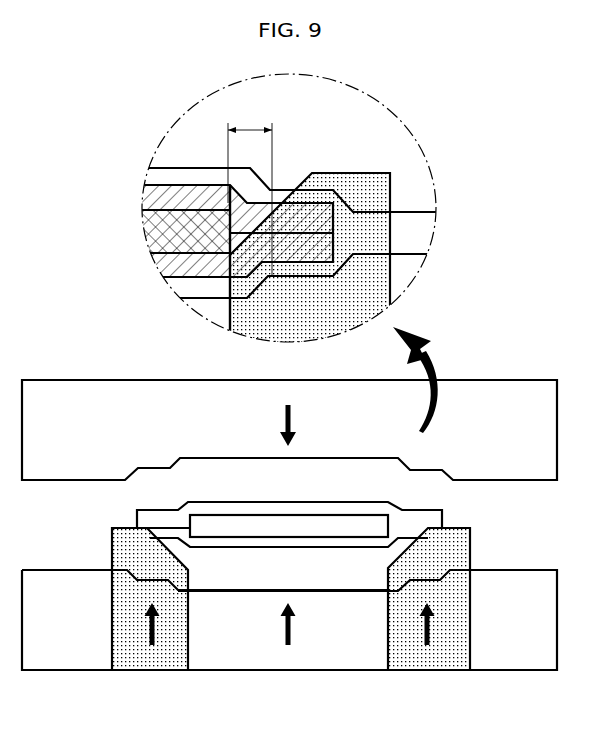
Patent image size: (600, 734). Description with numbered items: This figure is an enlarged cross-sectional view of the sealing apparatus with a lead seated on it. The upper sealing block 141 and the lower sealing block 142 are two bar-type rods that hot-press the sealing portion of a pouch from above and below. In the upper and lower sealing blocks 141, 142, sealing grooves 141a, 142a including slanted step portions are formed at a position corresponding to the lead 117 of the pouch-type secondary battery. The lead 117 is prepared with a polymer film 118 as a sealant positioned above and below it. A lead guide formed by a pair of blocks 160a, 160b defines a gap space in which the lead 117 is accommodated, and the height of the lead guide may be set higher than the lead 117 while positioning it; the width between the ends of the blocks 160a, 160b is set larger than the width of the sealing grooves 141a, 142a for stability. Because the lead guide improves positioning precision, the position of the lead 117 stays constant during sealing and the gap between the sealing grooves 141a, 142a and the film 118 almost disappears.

The upper sealing block 141 is at (58, 480).
The sealing groove 141a is at (243, 458).
The lower sealing block 142 is at (58, 570).
The sealing groove 142a is at (242, 591).
The lead 117 is at (225, 518).
The polymer film 118 is at (273, 505).
The block 160a is at (137, 660).
The block 160b is at (435, 660).